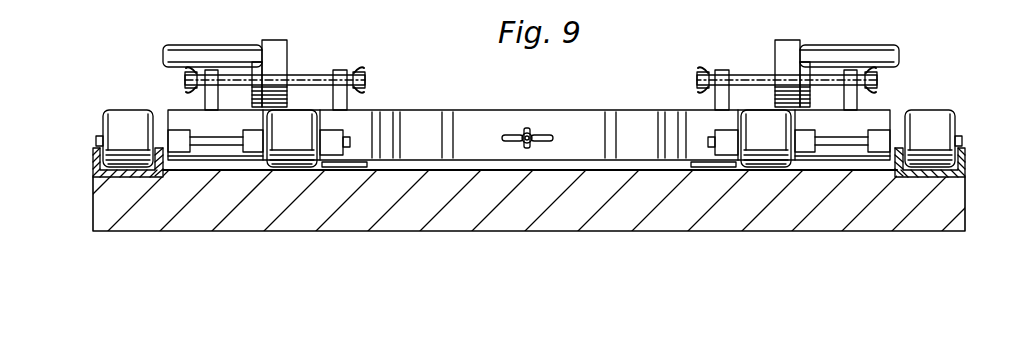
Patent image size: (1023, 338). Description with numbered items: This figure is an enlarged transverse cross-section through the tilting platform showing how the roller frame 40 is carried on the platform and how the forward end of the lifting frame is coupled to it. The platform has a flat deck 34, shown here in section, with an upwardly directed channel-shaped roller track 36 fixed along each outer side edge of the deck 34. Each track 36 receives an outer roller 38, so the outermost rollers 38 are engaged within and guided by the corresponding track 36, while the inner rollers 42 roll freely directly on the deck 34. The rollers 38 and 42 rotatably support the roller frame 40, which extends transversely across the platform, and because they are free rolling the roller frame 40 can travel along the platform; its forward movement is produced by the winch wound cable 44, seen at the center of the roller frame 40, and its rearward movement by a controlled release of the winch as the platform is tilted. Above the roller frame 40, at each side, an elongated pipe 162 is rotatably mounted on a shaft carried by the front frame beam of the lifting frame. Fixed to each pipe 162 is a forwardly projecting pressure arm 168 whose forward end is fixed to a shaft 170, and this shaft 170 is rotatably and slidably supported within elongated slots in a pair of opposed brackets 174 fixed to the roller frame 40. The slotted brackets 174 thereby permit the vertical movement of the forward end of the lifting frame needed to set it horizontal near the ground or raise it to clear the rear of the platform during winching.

The flat deck 34 is at (495, 214).
The channel-shaped roller track 36 is at (95, 160).
The outer roller 38 is at (942, 122).
The roller frame 40 is at (514, 106).
The inner roller 42 is at (757, 162).
The winch wound cable 44 is at (537, 135).
The elongated pipe 162 is at (197, 48).
The pressure arm 168 is at (283, 58).
The shaft 170 is at (313, 77).
The bracket 174 is at (345, 105).